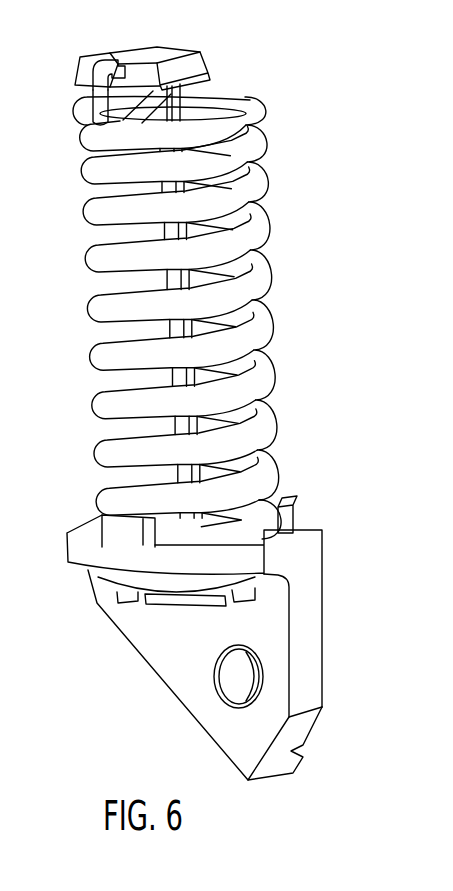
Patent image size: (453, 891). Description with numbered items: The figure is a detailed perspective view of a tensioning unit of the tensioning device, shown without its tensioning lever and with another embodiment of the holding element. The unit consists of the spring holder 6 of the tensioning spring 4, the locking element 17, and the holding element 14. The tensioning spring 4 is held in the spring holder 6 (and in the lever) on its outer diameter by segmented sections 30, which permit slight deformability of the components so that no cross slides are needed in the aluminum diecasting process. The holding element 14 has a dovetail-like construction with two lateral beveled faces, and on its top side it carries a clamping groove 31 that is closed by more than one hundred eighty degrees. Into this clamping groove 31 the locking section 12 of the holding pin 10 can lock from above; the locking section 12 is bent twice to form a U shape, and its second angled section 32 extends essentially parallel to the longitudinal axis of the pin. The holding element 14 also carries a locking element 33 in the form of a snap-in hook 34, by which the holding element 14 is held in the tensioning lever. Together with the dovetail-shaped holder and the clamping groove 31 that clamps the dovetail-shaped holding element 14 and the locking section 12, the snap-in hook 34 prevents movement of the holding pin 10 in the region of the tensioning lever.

The tensioning spring 4 is at (171, 315).
The spring holder 6 is at (202, 631).
The holding pin 10 is at (256, 263).
The locking section 12 is at (101, 62).
The holding element 14 is at (153, 45).
The locking element 17 is at (140, 470).
The segmented sections 30 is at (297, 511).
The clamping groove 31 is at (143, 49).
The second angled section 32 is at (96, 98).
The locking element 33 is at (186, 97).
The snap-in hook 34 is at (130, 113).